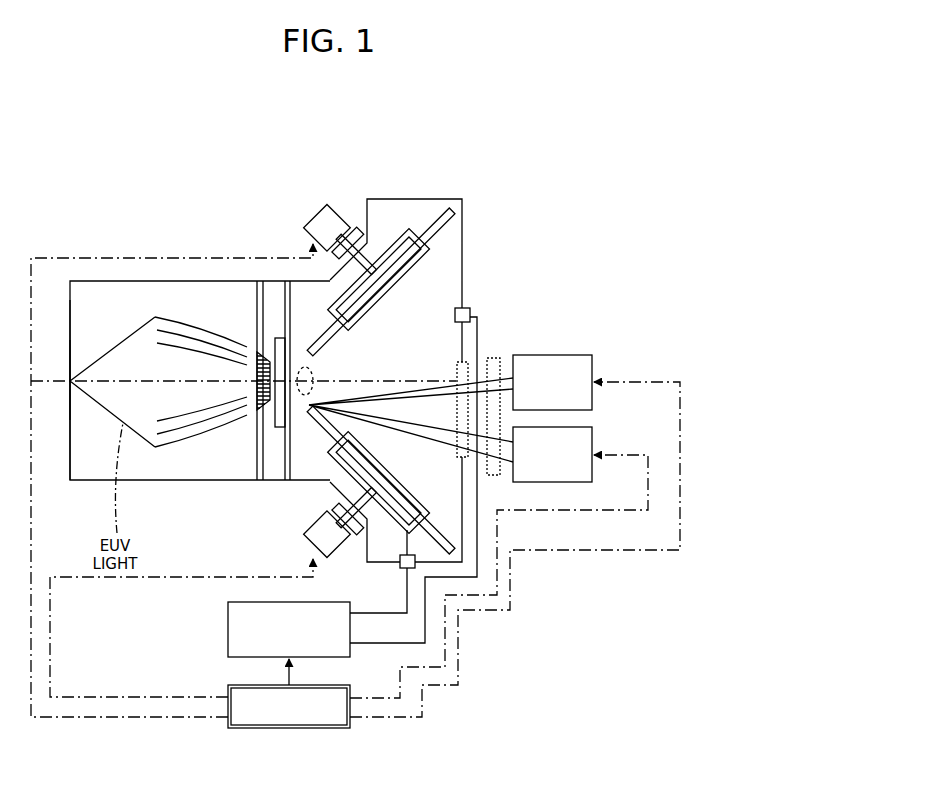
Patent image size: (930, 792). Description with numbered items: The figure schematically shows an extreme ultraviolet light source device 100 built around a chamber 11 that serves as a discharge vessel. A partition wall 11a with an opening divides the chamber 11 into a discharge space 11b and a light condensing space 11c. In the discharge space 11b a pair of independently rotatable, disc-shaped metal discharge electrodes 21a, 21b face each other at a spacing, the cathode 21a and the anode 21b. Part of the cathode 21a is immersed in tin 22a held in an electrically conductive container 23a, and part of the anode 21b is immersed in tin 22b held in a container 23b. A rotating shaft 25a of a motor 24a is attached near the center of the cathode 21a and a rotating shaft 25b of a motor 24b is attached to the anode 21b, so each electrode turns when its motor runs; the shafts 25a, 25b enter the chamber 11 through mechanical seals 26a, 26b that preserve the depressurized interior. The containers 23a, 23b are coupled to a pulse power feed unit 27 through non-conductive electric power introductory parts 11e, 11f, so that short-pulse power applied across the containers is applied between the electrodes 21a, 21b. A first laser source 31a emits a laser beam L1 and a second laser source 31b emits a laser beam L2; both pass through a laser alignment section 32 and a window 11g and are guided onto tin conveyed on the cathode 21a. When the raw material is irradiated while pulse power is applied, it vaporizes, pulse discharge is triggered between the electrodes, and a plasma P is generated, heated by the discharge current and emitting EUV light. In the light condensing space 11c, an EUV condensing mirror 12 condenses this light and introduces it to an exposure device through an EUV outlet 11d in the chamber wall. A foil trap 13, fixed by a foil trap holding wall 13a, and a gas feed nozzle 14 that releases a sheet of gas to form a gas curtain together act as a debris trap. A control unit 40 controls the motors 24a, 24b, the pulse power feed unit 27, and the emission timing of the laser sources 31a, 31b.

The EUV light source device 100 is at (518, 163).
The chamber 11 is at (166, 280).
The partition wall 11a is at (283, 470).
The discharge space 11b is at (415, 208).
The light condensing space 11c is at (83, 297).
The EUV outlet 11d is at (67, 388).
The electric power introductory part 11e is at (465, 308).
The electric power introductory part 11f is at (400, 562).
The window 11g is at (468, 360).
The EUV condensing mirror 12 is at (182, 445).
The foil trap 13 is at (257, 357).
The foil trap holding wall 13a is at (257, 300).
The gas feed nozzle 14 is at (278, 340).
The discharge electrode 21a is at (410, 523).
The discharge electrode 21b is at (453, 208).
The high temperature plasma raw material 22a is at (412, 527).
The high temperature plasma raw material 22b is at (415, 258).
The container 23a is at (430, 506).
The container 23b is at (418, 275).
The motor 24a is at (305, 540).
The motor 24b is at (318, 206).
The rotating shaft 25a is at (338, 515).
The rotating shaft 25b is at (382, 243).
The mechanical seal 26a is at (333, 522).
The mechanical seal 26b is at (355, 236).
The pulse power feed unit 27 is at (228, 620).
The first laser source 31a is at (592, 358).
The second laser source 31b is at (592, 432).
The laser alignment section 32 is at (496, 357).
The control unit 40 is at (318, 730).
The plasma P is at (316, 368).
The laser beam L1 is at (432, 375).
The laser beam L2 is at (430, 442).